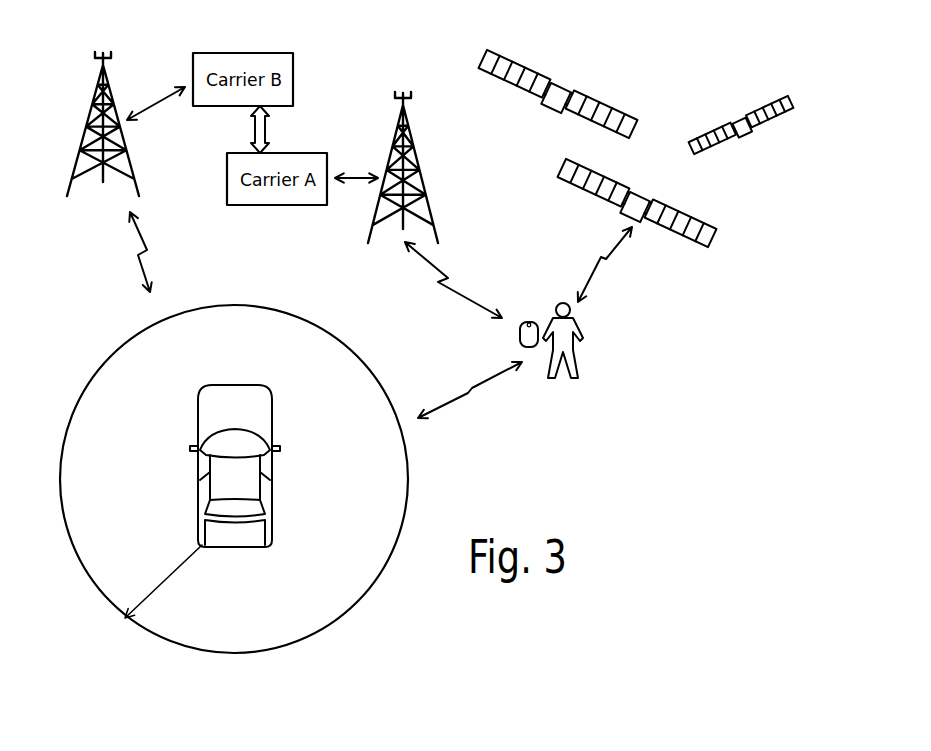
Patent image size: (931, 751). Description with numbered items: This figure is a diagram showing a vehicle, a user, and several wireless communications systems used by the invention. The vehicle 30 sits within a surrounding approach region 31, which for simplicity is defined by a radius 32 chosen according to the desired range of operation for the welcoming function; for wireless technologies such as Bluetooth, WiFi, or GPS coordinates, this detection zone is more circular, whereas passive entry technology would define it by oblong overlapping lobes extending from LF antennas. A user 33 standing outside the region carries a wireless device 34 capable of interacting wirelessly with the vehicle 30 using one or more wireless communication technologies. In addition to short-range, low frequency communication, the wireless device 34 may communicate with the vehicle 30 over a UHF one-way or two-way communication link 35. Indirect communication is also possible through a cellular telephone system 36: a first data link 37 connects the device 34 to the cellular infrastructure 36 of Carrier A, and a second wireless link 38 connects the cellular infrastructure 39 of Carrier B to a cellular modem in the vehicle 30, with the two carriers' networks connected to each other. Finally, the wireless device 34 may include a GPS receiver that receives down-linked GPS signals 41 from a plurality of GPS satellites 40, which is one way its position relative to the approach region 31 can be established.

The vehicle 30 is at (265, 543).
The approach region 31 is at (137, 363).
The radius 32 is at (177, 567).
The user 33 is at (577, 362).
The wireless device 34 is at (527, 322).
The communication link 35 is at (485, 390).
The cellular telephone system 36 is at (355, 123).
The first data link 37 is at (453, 295).
The second wireless link 38 is at (133, 237).
The cellular infrastructure 39 is at (148, 67).
The GPS satellites 40 is at (663, 108).
The GPS signals 41 is at (615, 262).